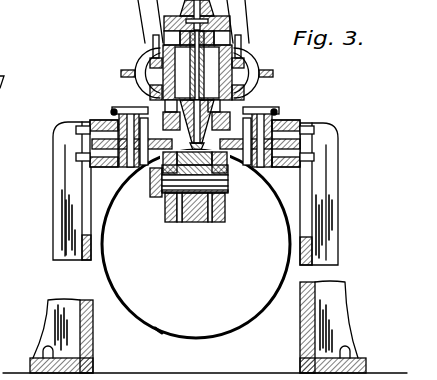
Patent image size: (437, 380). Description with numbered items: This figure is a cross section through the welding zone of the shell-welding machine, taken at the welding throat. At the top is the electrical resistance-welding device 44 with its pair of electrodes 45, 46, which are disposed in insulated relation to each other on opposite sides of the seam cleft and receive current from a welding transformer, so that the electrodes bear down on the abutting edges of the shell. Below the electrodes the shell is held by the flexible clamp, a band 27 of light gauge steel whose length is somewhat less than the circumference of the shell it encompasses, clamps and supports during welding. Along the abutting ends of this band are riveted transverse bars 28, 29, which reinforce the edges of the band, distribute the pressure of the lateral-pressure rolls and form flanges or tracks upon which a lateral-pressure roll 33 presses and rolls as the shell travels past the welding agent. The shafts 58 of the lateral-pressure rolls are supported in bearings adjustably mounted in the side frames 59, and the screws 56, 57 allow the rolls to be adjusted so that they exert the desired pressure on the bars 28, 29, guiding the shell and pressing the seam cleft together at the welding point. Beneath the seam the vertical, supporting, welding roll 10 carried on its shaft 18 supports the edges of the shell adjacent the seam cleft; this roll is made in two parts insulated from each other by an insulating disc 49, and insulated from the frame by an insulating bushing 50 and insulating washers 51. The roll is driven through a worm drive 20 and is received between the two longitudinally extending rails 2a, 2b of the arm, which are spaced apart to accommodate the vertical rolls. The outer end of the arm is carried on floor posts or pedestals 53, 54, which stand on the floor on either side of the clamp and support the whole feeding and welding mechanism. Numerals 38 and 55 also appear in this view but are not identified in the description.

The electrode 46 is at (151, 12).
The electrode 45 is at (247, 14).
The electrical resistance-welding device 44 is at (241, 41).
The shaft of lateral-pressure roll 58 is at (114, 109).
The bracket 38 is at (118, 110).
The transverse bar 29 is at (168, 137).
The transverse bar 28 is at (232, 122).
The screw 56 is at (77, 128).
The screw 57 is at (77, 162).
The lateral-pressure roll 33 is at (86, 143).
The side frame 59 is at (95, 170).
The floor post 53 is at (55, 217).
The floor post 54 is at (328, 223).
The shaft 18 is at (230, 185).
The insulating washer 51 is at (157, 200).
The rail 2a is at (228, 222).
The worm drive 20 is at (153, 198).
The rail 2b is at (168, 205).
The insulating bushing 50 is at (184, 196).
The vertical supporting welding roll 10 is at (180, 210).
The insulating disc 49 is at (190, 222).
The wheel 55 is at (158, 327).
The band 27 is at (247, 328).